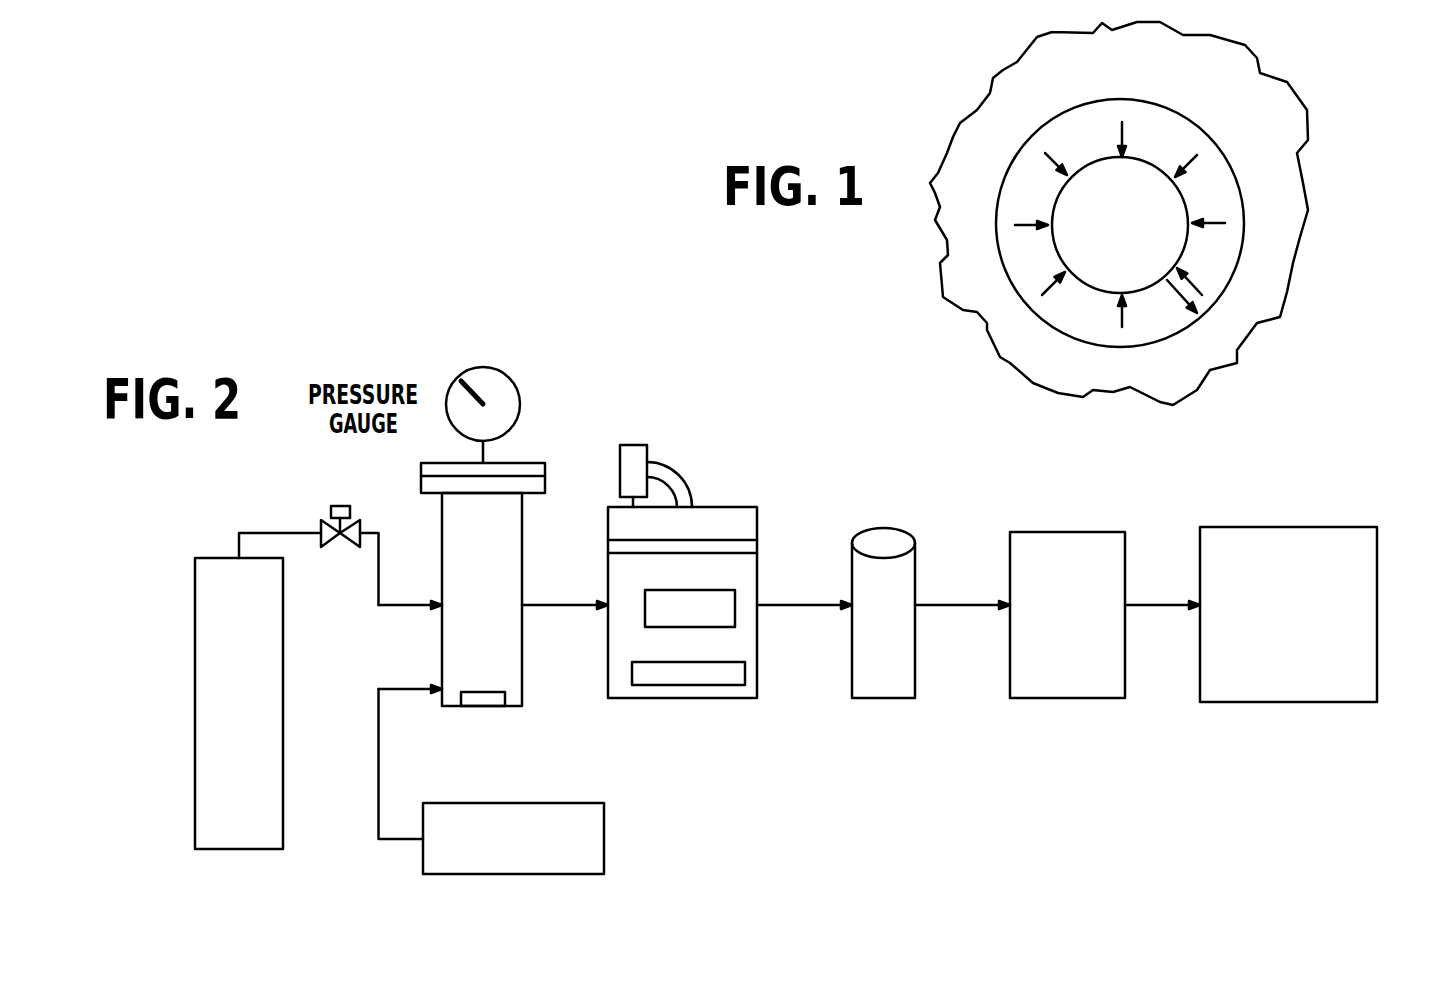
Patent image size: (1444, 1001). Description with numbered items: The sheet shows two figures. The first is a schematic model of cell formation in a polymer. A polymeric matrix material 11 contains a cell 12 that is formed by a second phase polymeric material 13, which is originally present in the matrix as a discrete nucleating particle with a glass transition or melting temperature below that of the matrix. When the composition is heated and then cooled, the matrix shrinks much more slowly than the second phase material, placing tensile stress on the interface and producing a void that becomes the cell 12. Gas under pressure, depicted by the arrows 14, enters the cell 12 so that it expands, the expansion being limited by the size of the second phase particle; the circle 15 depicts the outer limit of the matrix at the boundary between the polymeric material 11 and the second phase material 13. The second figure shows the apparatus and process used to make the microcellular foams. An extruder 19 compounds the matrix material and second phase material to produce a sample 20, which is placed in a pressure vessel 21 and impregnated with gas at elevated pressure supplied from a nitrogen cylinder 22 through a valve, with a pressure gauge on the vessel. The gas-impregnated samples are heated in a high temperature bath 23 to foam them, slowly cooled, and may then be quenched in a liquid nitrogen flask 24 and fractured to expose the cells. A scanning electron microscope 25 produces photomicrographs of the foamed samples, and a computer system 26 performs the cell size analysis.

In FIG. 1, the polymeric matrix material 11 is at (1224, 88).
In FIG. 1, the cell 12 is at (1120, 225).
In FIG. 1, the second phase polymeric material 13 is at (1176, 153).
In FIG. 1, the arrows 14 is at (1015, 227).
In FIG. 1, the circle 15 is at (1233, 170).
In FIG. 1, the extruder 19 is at (1045, 153).
In FIG. 2, the extruder 19 is at (543, 803).
In FIG. 2, the sample 20 is at (488, 688).
In FIG. 2, the pressure vessel 21 is at (524, 568).
In FIG. 2, the nitrogen cylinder 22 is at (195, 640).
In FIG. 2, the high temperature bath 23 is at (757, 590).
In FIG. 2, the liquid nitrogen flask 24 is at (915, 585).
In FIG. 2, the scanning electron microscope 25 is at (1125, 583).
In FIG. 2, the computer system 26 is at (1377, 597).